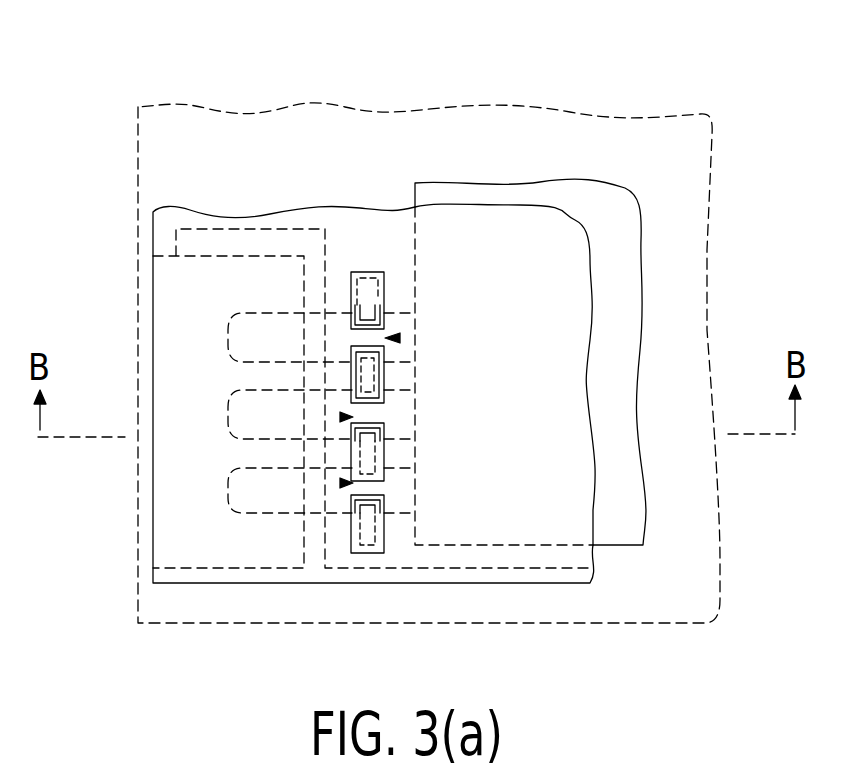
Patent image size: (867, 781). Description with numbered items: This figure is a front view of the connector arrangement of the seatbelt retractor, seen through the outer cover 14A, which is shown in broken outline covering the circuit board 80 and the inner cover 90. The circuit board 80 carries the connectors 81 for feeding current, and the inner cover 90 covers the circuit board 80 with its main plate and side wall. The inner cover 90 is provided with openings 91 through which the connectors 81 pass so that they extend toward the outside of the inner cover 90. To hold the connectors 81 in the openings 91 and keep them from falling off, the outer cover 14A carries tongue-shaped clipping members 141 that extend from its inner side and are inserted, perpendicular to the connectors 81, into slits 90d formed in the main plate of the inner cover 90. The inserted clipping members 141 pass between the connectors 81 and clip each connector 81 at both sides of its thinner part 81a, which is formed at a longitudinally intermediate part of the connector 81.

The outer cover 14A is at (281, 108).
The circuit board 80 is at (638, 205).
The inner cover 90 is at (362, 213).
The slits 90d is at (367, 272).
The openings 91 is at (325, 313).
The connectors 81 is at (228, 415).
The thinner part 81a is at (398, 336).
The clipping members 141 is at (390, 292).